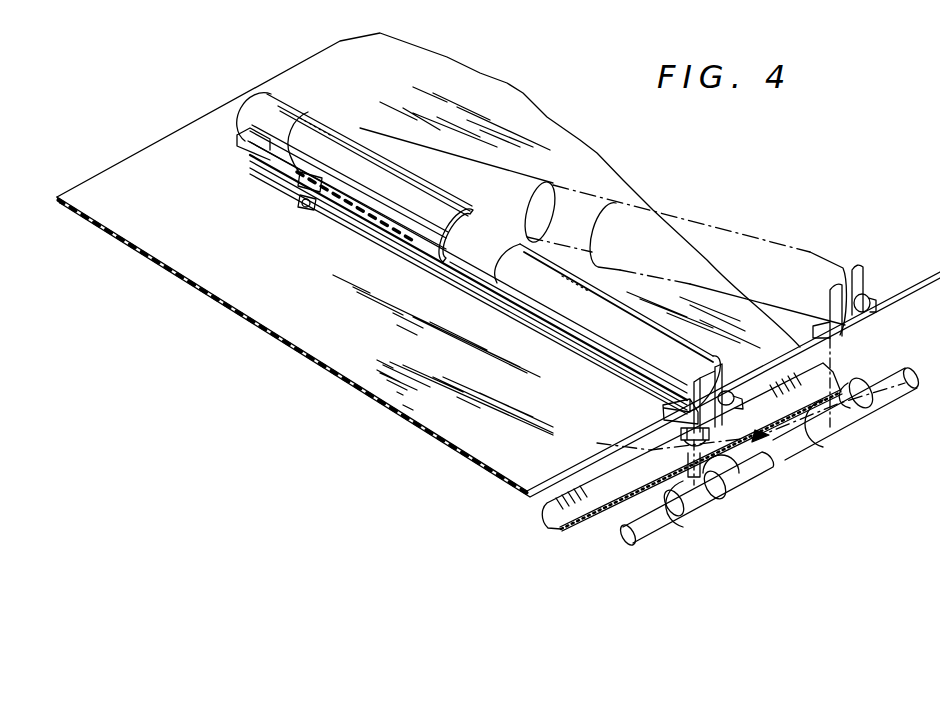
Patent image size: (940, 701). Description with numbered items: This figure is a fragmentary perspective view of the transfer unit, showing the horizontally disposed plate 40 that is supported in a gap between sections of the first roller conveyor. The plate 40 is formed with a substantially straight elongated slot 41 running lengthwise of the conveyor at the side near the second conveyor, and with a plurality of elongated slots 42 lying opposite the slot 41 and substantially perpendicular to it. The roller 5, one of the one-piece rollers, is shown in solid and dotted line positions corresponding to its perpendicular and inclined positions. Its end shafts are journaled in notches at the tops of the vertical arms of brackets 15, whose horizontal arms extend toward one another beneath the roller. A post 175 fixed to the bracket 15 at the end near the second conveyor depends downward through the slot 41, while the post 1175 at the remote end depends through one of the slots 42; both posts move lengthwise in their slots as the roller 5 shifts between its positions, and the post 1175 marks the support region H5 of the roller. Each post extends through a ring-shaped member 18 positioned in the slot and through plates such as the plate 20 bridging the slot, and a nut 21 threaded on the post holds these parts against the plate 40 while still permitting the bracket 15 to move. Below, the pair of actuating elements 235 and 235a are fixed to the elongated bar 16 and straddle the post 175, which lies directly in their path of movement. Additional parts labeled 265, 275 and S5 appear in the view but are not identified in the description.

The plate 40 is at (420, 428).
The elongated slot 41 is at (560, 484).
The nut 21 is at (617, 443).
The elongated slots 42 is at (396, 232).
The carrier tube 265 is at (407, 178).
The strip S5 is at (363, 233).
The support region H5 is at (310, 217).
The post 1175 is at (306, 212).
The roller 275 is at (597, 348).
The roller 5 is at (477, 278).
The bracket 15 is at (745, 360).
The plate 20 is at (664, 407).
The ring-shaped member 18 is at (681, 430).
The post 175 is at (865, 353).
The actuating element 235 is at (886, 396).
The actuating element 235a is at (840, 428).
The elongated bar 16 is at (647, 543).